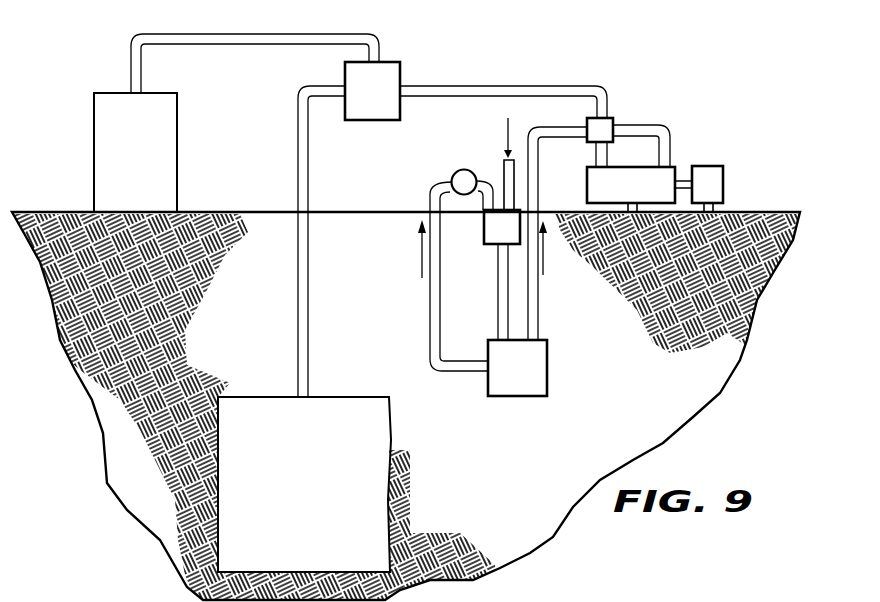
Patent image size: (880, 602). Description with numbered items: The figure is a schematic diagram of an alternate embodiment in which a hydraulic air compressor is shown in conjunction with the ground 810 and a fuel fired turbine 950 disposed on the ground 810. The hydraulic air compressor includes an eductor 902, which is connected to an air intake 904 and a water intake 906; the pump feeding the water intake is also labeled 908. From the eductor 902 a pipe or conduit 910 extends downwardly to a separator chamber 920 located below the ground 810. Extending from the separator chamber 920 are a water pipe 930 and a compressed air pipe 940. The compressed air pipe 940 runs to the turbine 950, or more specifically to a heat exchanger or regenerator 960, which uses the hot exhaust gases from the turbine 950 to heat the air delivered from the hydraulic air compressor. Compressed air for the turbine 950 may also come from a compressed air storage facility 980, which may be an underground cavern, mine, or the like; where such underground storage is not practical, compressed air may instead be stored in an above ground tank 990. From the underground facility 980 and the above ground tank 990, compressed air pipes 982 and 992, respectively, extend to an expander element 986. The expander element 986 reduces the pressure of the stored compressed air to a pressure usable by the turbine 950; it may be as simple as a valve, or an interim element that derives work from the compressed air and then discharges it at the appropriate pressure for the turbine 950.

The ground 810 is at (757, 198).
The above ground storage tank 990 is at (84, 155).
The compressed air pipe 992 is at (217, 47).
The expander element 986 is at (400, 63).
The compressed air pipe 982 is at (298, 286).
The heat exchanger or regenerator 960 is at (620, 110).
The fuel fired turbine 950 is at (675, 152).
The pump 908 is at (442, 170).
The water intake 906 is at (482, 175).
The air intake 904 is at (504, 165).
The eductor 902 is at (484, 220).
The water pipe 930 is at (429, 286).
The pipe or conduit 910 is at (498, 286).
The compressed air pipe 940 is at (539, 280).
The separator chamber 920 is at (562, 373).
The compressed air storage facility 980 is at (275, 385).